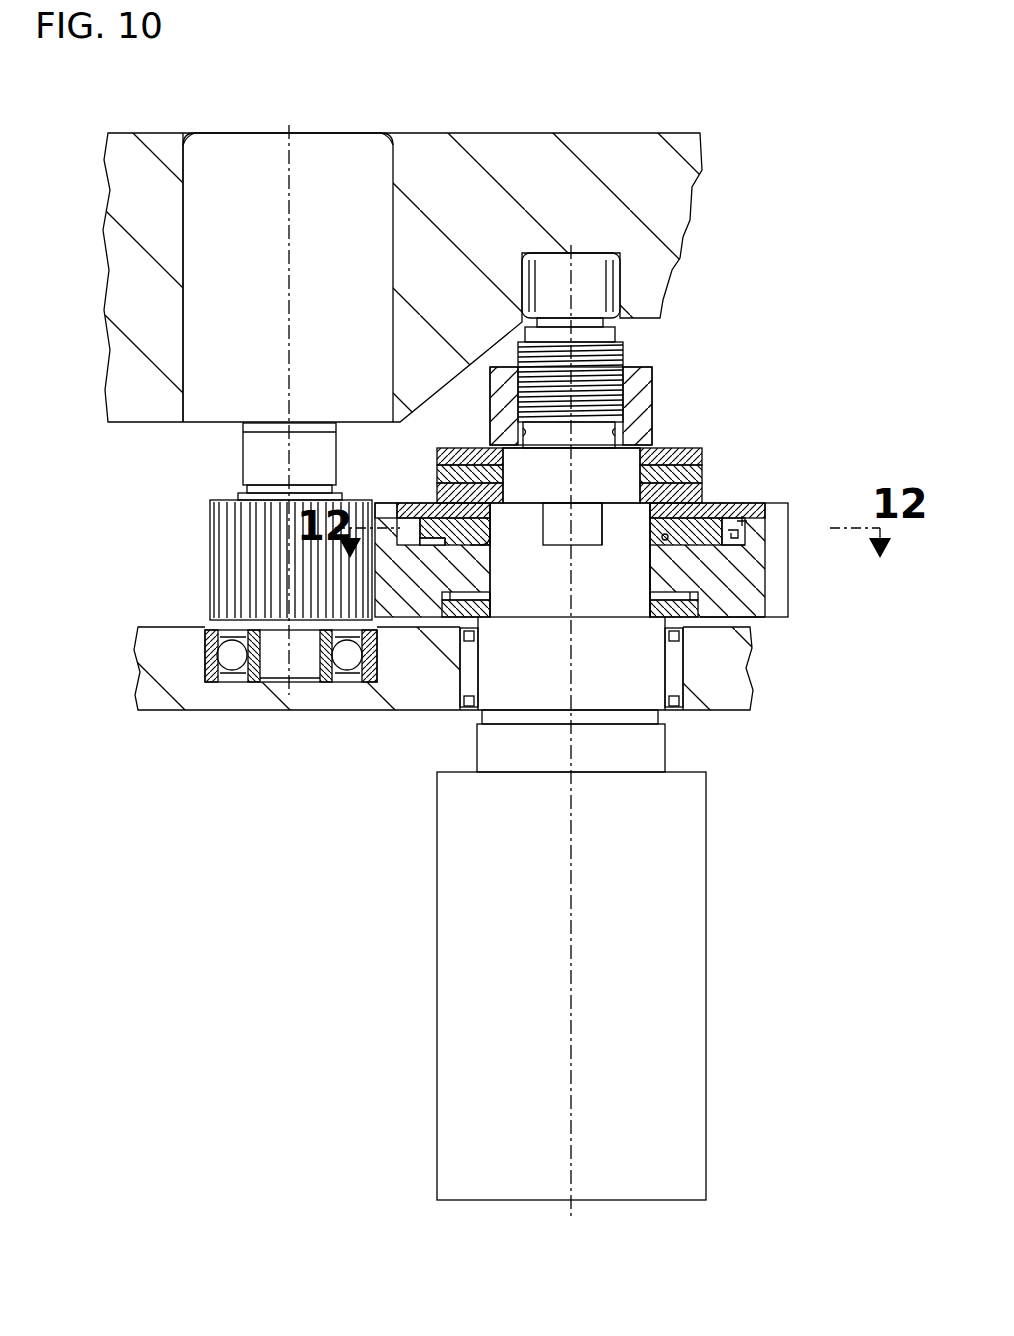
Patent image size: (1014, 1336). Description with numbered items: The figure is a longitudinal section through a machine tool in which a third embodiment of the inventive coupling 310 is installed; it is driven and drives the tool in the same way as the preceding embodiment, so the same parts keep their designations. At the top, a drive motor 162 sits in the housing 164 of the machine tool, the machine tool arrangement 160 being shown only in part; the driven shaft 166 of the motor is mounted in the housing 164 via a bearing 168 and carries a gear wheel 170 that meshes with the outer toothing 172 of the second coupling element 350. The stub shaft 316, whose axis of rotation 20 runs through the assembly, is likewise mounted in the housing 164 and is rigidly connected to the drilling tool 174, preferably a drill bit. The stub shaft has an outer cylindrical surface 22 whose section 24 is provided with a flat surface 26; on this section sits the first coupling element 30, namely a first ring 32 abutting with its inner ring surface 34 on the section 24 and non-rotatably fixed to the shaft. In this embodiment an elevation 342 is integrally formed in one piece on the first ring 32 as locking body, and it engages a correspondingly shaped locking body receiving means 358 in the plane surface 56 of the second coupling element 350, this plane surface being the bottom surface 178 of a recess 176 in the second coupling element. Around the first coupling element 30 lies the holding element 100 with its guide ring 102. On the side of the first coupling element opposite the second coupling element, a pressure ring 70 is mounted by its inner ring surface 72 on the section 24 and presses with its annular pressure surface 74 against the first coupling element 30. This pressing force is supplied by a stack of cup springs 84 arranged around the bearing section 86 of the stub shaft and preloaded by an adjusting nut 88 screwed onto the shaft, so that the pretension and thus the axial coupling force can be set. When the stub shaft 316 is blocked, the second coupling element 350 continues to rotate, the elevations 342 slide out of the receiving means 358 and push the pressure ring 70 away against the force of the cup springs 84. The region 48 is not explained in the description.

The axis of rotation 20 is at (575, 1165).
The outer cylindrical surface 22 is at (560, 600).
The section 24 is at (642, 537).
The flat surface 26 is at (573, 537).
The first coupling element 30 is at (395, 500).
The first ring 32 is at (440, 515).
The inner ring surface 34 is at (492, 528).
The coupling body portion 48 is at (634, 600).
The plane surface 56 is at (665, 541).
The pressure ring 70 is at (710, 510).
The inner ring surface 72 is at (490, 508).
The annular pressure surface 74 is at (486, 525).
The stack of cup springs 84 is at (689, 434).
The bearing section 86 is at (614, 492).
The adjusting nut 88 is at (643, 393).
The holding element 100 is at (731, 506).
The guide ring 102 is at (746, 520).
The housing 160 is at (605, 120).
The drive motor 162 is at (352, 150).
The housing 164 is at (156, 150).
The driven shaft 166 is at (255, 455).
The bearing 168 is at (218, 683).
The gear wheel 170 is at (222, 573).
The outer toothing 172 is at (772, 590).
The drilling tool 174 is at (698, 1052).
The recess 176 is at (740, 537).
The bottom surface 178 is at (732, 545).
The coupling 310 is at (787, 376).
The stub shaft 316 is at (610, 380).
The elevation 342 is at (448, 545).
The second coupling element 350 is at (722, 603).
The locking body receiving means 358 is at (433, 545).